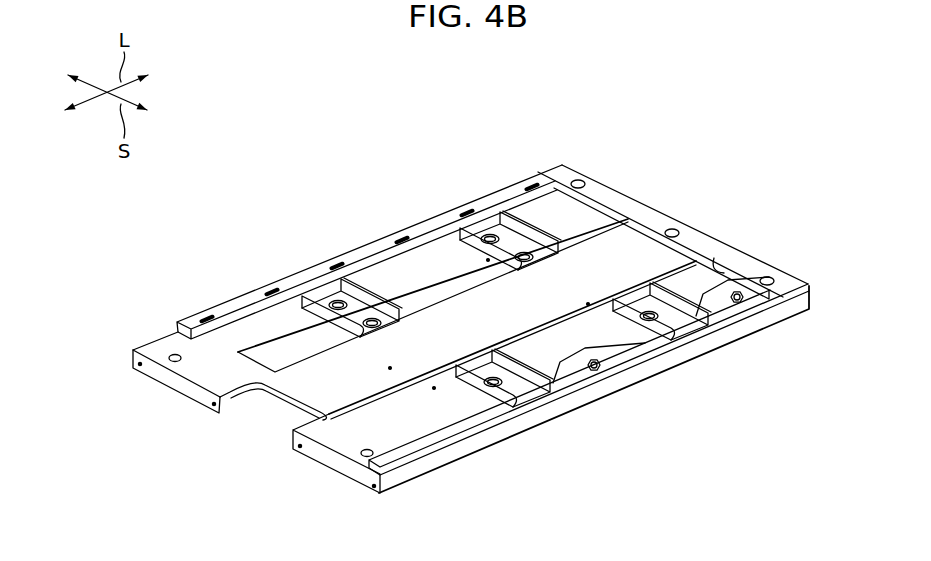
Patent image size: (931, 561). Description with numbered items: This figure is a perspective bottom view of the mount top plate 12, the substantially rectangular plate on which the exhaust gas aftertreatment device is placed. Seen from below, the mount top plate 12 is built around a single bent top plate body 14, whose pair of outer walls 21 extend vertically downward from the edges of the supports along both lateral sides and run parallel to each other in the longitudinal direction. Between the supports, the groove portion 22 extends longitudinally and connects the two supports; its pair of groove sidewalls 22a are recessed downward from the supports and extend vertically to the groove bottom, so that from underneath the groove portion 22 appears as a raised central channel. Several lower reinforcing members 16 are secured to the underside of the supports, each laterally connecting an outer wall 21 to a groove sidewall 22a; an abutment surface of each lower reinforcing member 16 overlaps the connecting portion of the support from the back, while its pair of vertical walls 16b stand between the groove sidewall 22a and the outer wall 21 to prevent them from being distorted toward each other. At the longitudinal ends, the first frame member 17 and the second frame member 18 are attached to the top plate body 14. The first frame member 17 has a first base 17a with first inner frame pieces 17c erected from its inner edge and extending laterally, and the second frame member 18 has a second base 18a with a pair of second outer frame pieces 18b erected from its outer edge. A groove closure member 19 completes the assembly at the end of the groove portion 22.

The mount top plate 12 is at (706, 160).
The top plate body 14 is at (265, 340).
The lower reinforcing member 16 is at (532, 218).
The vertical wall 16b is at (452, 240).
The first frame member 17 is at (596, 175).
The first base 17a is at (752, 262).
The first inner frame piece 17c is at (718, 265).
The second frame member 18 is at (158, 335).
The second base 18a is at (217, 355).
The second outer frame piece 18b is at (180, 397).
The groove closure member 19 is at (312, 400).
The outer wall 21 is at (285, 292).
The groove portion 22 is at (632, 228).
The groove sidewall 22a is at (390, 397).